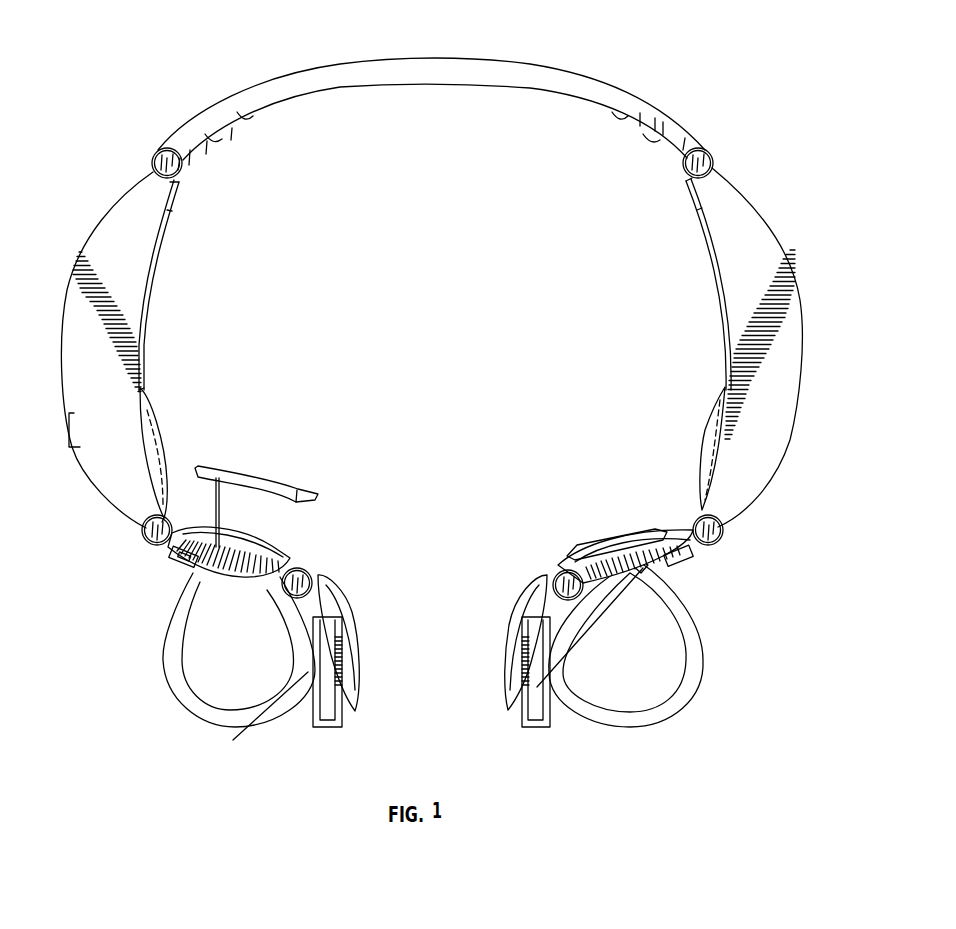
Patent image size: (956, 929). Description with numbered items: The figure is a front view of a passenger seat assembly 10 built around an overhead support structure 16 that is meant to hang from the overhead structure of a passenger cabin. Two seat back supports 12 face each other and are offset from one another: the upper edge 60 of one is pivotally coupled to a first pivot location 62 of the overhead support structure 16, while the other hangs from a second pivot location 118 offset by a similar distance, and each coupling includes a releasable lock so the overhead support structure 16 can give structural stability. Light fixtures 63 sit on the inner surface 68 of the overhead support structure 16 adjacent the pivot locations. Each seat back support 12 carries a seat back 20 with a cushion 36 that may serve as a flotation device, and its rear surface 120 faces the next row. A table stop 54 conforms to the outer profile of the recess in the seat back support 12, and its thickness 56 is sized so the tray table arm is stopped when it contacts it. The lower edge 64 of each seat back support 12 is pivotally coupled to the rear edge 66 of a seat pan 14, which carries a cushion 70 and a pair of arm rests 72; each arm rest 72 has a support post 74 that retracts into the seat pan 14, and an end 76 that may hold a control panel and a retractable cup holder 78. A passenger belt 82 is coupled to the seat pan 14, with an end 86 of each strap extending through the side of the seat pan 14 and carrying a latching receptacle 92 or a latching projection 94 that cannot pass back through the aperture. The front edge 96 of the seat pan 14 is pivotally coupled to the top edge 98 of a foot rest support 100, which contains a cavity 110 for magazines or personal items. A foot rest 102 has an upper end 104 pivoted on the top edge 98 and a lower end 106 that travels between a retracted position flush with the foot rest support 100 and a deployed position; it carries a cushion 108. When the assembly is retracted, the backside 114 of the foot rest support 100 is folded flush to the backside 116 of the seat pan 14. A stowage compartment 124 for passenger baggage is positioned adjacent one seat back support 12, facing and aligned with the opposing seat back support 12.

The passenger seat assembly 10 is at (607, 37).
The seat back support 12 is at (123, 200).
The seat pan 14 is at (268, 561).
The overhead support structure 16 is at (437, 67).
The seat back 20 is at (143, 395).
The cushion 36 is at (153, 440).
The table stop 54 is at (145, 462).
The thickness 56 is at (140, 413).
The upper edge 60 is at (150, 160).
The first pivot location 62 is at (161, 149).
The light fixtures 63 is at (212, 138).
The lower edge 64 is at (142, 531).
The rear edge 66 is at (150, 547).
The inner surface 68 is at (362, 84).
The cushion 70 is at (255, 535).
The arm rests 72 is at (236, 476).
The support post 74 is at (220, 513).
The end 76 is at (292, 486).
The retractable cup holder 78 is at (313, 494).
The passenger belt 82 is at (170, 560).
The end 86 is at (190, 583).
The latching receptacle 92 is at (679, 548).
The latching projection 94 is at (176, 570).
The front edge 96 is at (308, 571).
The top edge 98 is at (331, 588).
The foot rest support 100 is at (333, 730).
The foot rest 102 is at (353, 683).
The upper end 104 is at (340, 600).
The lower end 106 is at (354, 720).
The cushion 108 is at (348, 650).
The cavity 110 is at (325, 713).
The backside 114 is at (225, 745).
The backside 116 is at (231, 580).
The second pivot location 118 is at (703, 148).
The rear surface 120 is at (66, 283).
The stowage compartment 124 is at (177, 700).